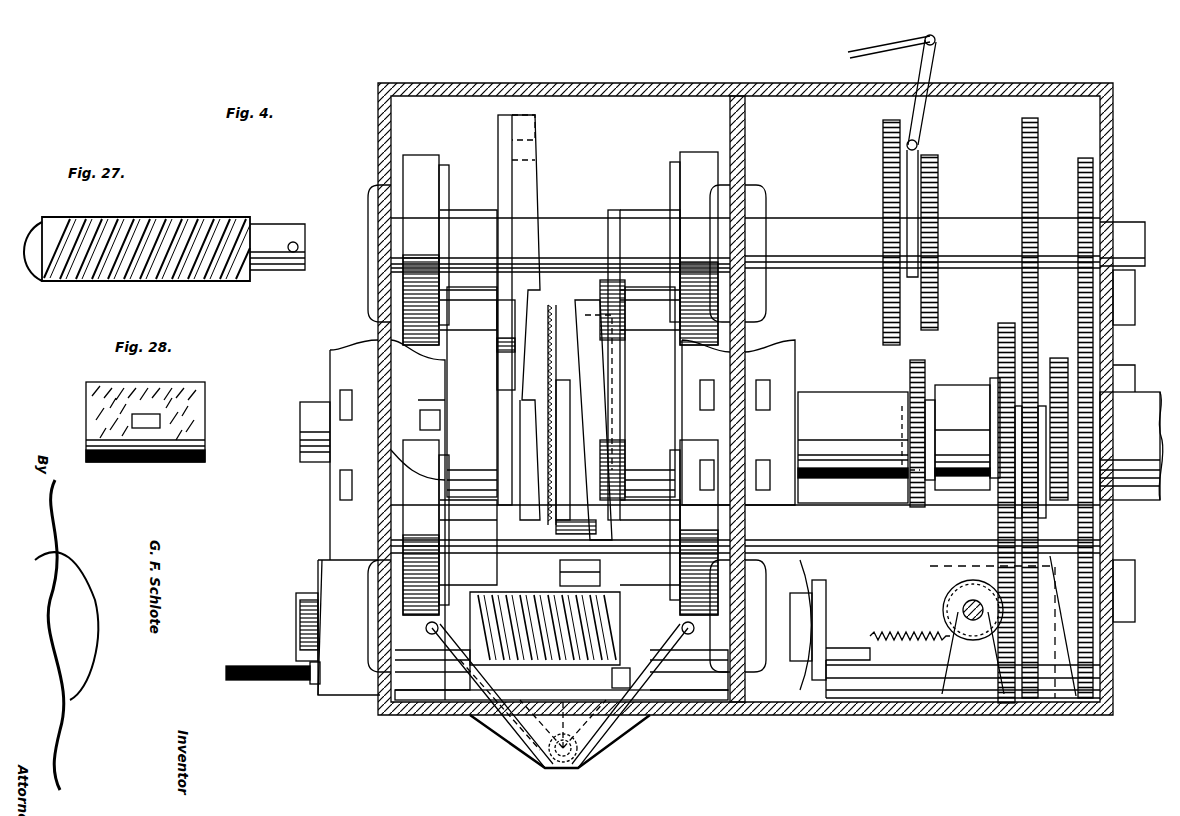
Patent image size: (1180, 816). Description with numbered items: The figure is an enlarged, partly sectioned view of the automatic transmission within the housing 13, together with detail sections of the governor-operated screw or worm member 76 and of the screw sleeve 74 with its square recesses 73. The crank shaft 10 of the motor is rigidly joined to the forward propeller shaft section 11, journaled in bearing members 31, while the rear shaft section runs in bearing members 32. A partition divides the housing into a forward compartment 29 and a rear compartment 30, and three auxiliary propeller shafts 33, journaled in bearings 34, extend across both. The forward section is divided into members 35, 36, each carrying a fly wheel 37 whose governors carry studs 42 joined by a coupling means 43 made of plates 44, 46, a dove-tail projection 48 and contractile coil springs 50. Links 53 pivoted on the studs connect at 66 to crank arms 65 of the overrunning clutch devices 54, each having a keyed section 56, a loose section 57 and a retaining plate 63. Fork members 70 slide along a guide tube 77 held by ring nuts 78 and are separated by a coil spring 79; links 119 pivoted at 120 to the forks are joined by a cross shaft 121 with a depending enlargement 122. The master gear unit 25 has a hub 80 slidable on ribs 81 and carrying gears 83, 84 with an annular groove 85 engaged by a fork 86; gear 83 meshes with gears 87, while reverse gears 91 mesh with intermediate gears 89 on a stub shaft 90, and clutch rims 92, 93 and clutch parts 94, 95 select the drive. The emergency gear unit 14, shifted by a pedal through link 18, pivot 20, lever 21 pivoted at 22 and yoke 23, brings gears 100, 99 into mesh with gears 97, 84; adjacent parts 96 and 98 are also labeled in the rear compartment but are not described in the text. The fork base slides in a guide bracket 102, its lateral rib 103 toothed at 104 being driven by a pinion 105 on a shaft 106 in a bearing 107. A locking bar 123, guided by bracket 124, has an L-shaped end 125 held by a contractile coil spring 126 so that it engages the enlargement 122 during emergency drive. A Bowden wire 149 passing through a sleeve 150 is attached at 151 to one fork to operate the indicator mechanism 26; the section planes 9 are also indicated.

In FIG. 4, the section line 9 is at (398, 90).
In FIG. 4, the crank shaft 10 is at (568, 120).
In FIG. 4, the forward propeller shaft section 11 is at (300, 426).
In FIG. 4, the housing 13 is at (378, 142).
In FIG. 4, the gear unit 14 is at (1070, 700).
In FIG. 4, the link 18 is at (848, 54).
In FIG. 4, the pivot 20 is at (936, 40).
In FIG. 4, the lever 21 is at (926, 72).
In FIG. 4, the pivot 22 is at (432, 92).
In FIG. 4, the yoke 23 is at (925, 226).
In FIG. 4, the master gear unit 25 is at (992, 380).
In FIG. 4, the indicator mechanism 26 is at (738, 90).
In FIG. 4, the forward compartment 29 is at (640, 112).
In FIG. 4, the rear compartment 30 is at (806, 100).
In FIG. 4, the bearing members 31 is at (513, 520).
In FIG. 4, the bearing members 32 is at (1134, 408).
In FIG. 4, the auxiliary propeller shafts 33 is at (862, 570).
In FIG. 4, the bearings 34 is at (368, 226).
In FIG. 4, the propeller shaft member 35 is at (440, 440).
In FIG. 4, the propeller shaft member 36 is at (675, 418).
In FIG. 4, the fly wheel 37 is at (561, 392).
In FIG. 4, the studs 42 is at (497, 358).
In FIG. 4, the coupling means 43 is at (546, 462).
In FIG. 4, the plate 44 is at (556, 308).
In FIG. 4, the plate 46 is at (566, 574).
In FIG. 4, the dove-tail projection 48 is at (556, 498).
In FIG. 4, the contractile coil springs 50 is at (564, 384).
In FIG. 4, the links 53 is at (548, 238).
In FIG. 4, the overrunning clutch devices 54 is at (460, 208).
In FIG. 4, the clutch section 56 is at (410, 154).
In FIG. 4, the clutch section 57 is at (484, 214).
In FIG. 4, the retaining plate 63 is at (416, 165).
In FIG. 4, the crank arms 65 is at (498, 124).
In FIG. 4, the pivotal connection 66 is at (498, 150).
In FIG. 4, the fork members 70 is at (392, 662).
In FIG. 28, the recesses 73 is at (148, 430).
In FIG. 28, the screw sleeves 74 is at (200, 402).
In FIG. 27, the screw or worm member 76 is at (215, 218).
In FIG. 4, the guide tube 77 is at (660, 718).
In FIG. 4, the ring nuts 78 is at (305, 592).
In FIG. 4, the coil spring 79 is at (545, 635).
In FIG. 4, the hub 80 is at (990, 506).
In FIG. 4, the ribs 81 is at (960, 434).
In FIG. 4, the gear member 83 is at (1060, 358).
In FIG. 4, the gear member 84 is at (1006, 322).
In FIG. 4, the annular groove 85 is at (1034, 380).
In FIG. 4, the fork 86 is at (1012, 742).
In FIG. 4, the gears 87 is at (1036, 170).
In FIG. 4, the intermediate gears 89 is at (1100, 320).
In FIG. 4, the stub shaft 90 is at (1120, 286).
In FIG. 4, the reverse gears 91 is at (1086, 158).
In FIG. 4, the clutch rim 92 is at (1112, 446).
In FIG. 4, the clutch portion 93 is at (1070, 484).
In FIG. 4, the clutch part 94 is at (985, 480).
In FIG. 4, the clutch part 95 is at (934, 380).
In FIG. 4, the drum 96 is at (852, 394).
In FIG. 4, the gear 97 is at (900, 372).
In FIG. 4, the pin 98 is at (904, 426).
In FIG. 4, the gear 99 is at (940, 310).
In FIG. 4, the gear 100 is at (884, 302).
In FIG. 4, the guide bracket 102 is at (884, 700).
In FIG. 4, the lateral rib 103 is at (1106, 718).
In FIG. 4, the teeth 104 is at (1060, 640).
In FIG. 4, the pinion 105 is at (952, 596).
In FIG. 4, the shaft 106 is at (976, 622).
In FIG. 4, the bearing 107 is at (990, 700).
In FIG. 4, the links 119 is at (486, 672).
In FIG. 4, the pivot 120 is at (426, 630).
In FIG. 4, the cross shaft 121 is at (580, 760).
In FIG. 4, the depending enlargement 122 is at (540, 762).
In FIG. 4, the locking bar 123 is at (812, 700).
In FIG. 4, the bracket 124 is at (712, 718).
In FIG. 4, the L-shaped end 125 is at (876, 654).
In FIG. 4, the contractile coil spring 126 is at (902, 644).
In FIG. 4, the Bowden wire 149 is at (228, 672).
In FIG. 4, the sleeve 150 is at (290, 682).
In FIG. 4, the attachment 151 is at (382, 698).